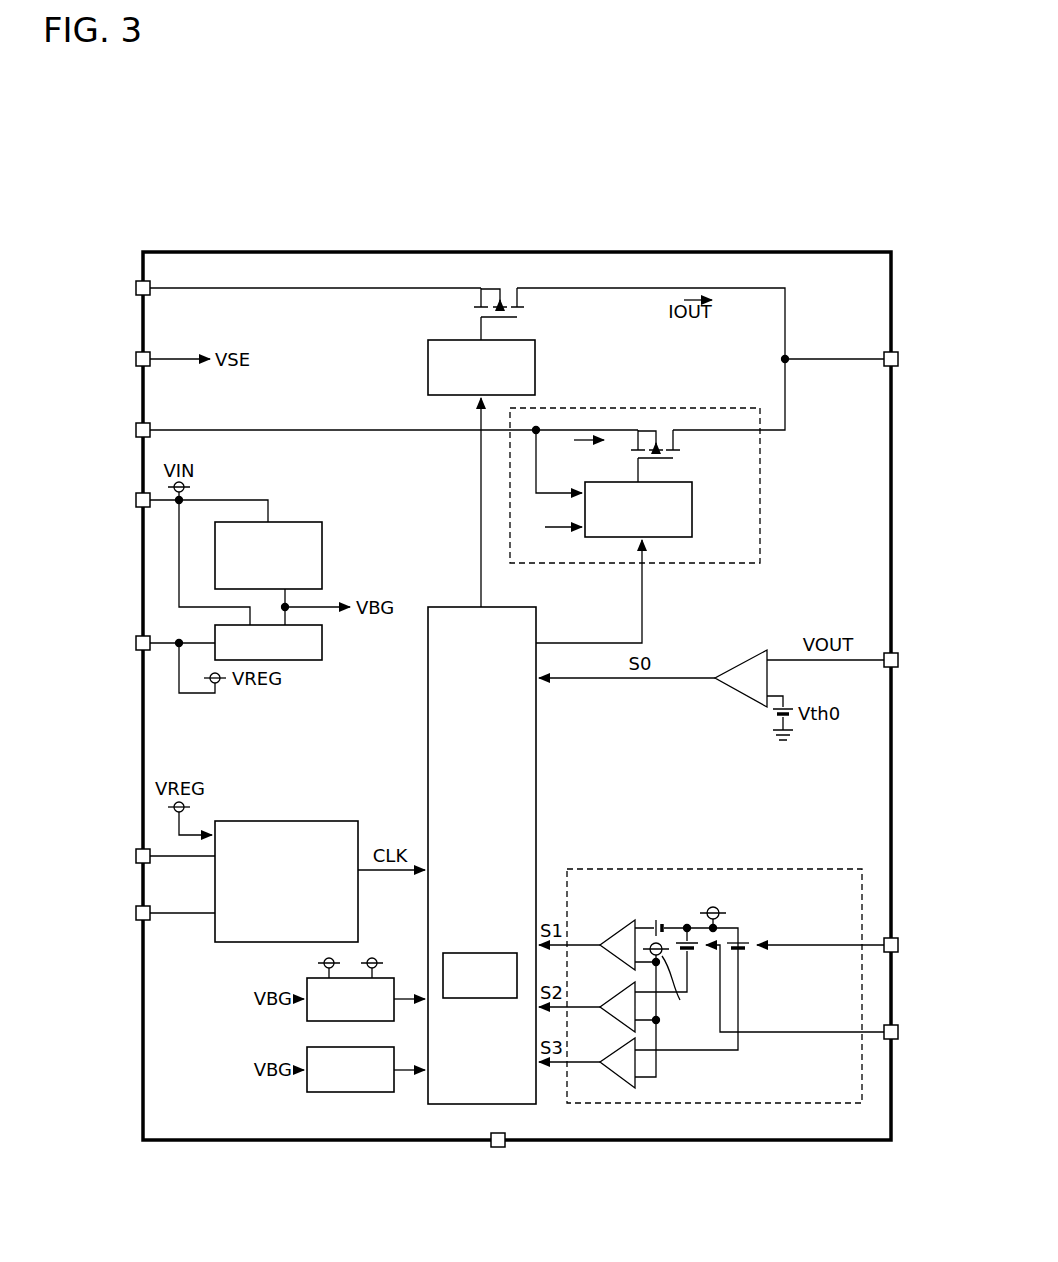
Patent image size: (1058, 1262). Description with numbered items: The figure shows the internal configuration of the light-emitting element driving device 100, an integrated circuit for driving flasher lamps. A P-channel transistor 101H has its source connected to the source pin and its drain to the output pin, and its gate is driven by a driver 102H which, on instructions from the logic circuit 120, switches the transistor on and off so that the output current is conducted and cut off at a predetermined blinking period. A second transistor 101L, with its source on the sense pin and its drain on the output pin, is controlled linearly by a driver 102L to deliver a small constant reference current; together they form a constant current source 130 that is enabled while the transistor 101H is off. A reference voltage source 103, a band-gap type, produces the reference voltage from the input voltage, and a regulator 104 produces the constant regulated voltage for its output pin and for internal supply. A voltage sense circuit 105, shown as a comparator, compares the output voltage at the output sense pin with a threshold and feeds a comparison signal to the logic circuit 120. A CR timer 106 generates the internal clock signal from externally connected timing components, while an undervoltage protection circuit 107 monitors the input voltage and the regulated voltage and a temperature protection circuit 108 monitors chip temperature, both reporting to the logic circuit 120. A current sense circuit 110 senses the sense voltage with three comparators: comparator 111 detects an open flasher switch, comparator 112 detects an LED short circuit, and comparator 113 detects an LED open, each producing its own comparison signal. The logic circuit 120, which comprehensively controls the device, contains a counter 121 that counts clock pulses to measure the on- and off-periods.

The light-emitting element driving device 100 is at (512, 251).
The P-channel MOS field-effect transistor 101H is at (525, 312).
The driver 102H is at (537, 370).
The constant current source 130 is at (651, 408).
The P-channel MOS field-effect transistor 101L is at (681, 452).
The driver 102L is at (694, 514).
The reference voltage source 103 is at (296, 521).
The regulator 104 is at (325, 645).
The voltage sense circuit 105 is at (738, 660).
The CR timer 106 is at (288, 821).
The undervoltage protection circuit 107 is at (350, 978).
The temperature protection circuit 108 is at (350, 1092).
The current sense circuit 110 is at (716, 866).
The comparator 111 is at (619, 930).
The comparator 112 is at (619, 992).
The comparator 113 is at (619, 1048).
The logic circuit 120 is at (458, 606).
The counter 121 is at (480, 952).